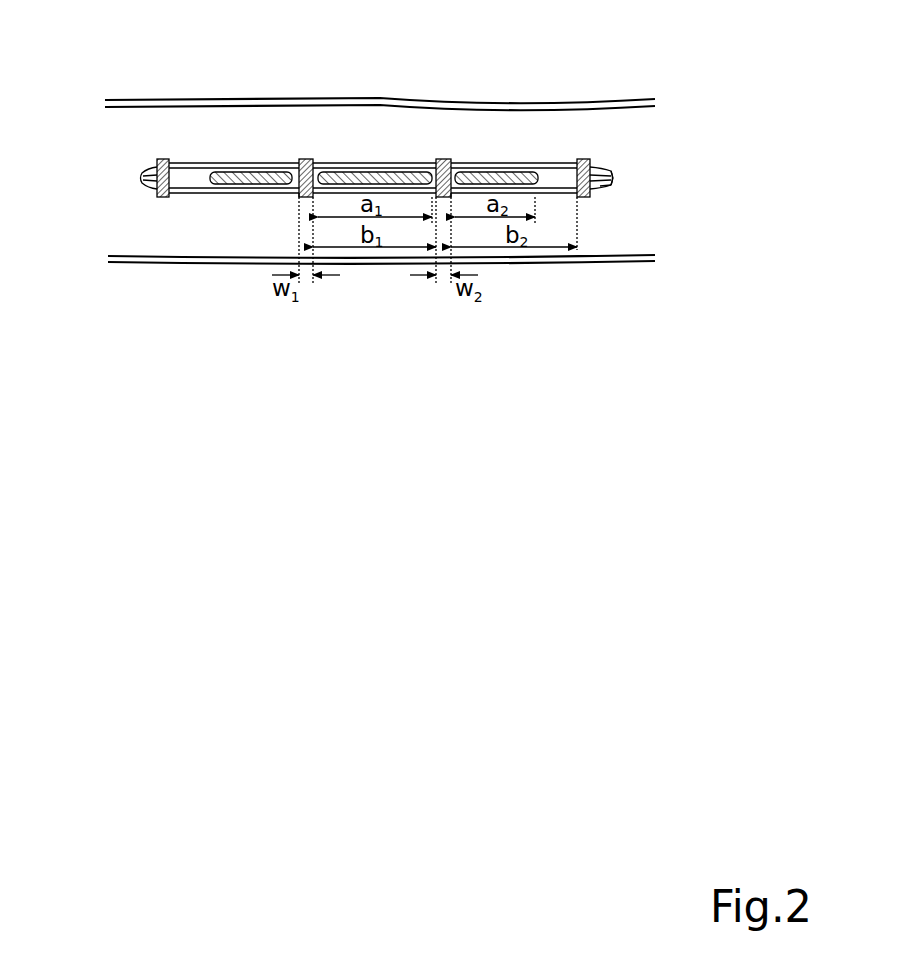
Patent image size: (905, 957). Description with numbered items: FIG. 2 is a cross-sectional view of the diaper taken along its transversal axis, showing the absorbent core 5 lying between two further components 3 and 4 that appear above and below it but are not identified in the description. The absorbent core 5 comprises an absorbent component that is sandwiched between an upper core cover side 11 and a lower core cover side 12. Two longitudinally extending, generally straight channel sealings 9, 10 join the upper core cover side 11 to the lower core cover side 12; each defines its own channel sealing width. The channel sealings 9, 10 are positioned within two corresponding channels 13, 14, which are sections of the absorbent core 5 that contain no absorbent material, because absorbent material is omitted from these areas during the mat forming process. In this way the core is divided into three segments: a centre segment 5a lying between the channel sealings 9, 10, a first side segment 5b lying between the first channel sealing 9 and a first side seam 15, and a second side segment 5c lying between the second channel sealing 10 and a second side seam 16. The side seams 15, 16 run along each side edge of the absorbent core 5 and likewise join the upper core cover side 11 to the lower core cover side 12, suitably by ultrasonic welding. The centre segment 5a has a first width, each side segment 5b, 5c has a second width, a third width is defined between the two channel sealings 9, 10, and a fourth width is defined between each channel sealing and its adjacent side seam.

The upper vessel wall 3 is at (130, 100).
The lower vessel wall 4 is at (137, 262).
The absorbent core 5 is at (362, 147).
The centre segment 5a is at (377, 163).
The first side segment 5b is at (272, 163).
The second side segment 5c is at (497, 163).
The first channel sealing 9 is at (299, 197).
The second channel sealing 10 is at (445, 162).
The upper core cover side 11 is at (613, 172).
The lower core cover side 12 is at (602, 189).
The first channel 13 is at (318, 163).
The second channel 14 is at (435, 162).
The first side seam 15 is at (157, 193).
The second side seam 16 is at (590, 163).